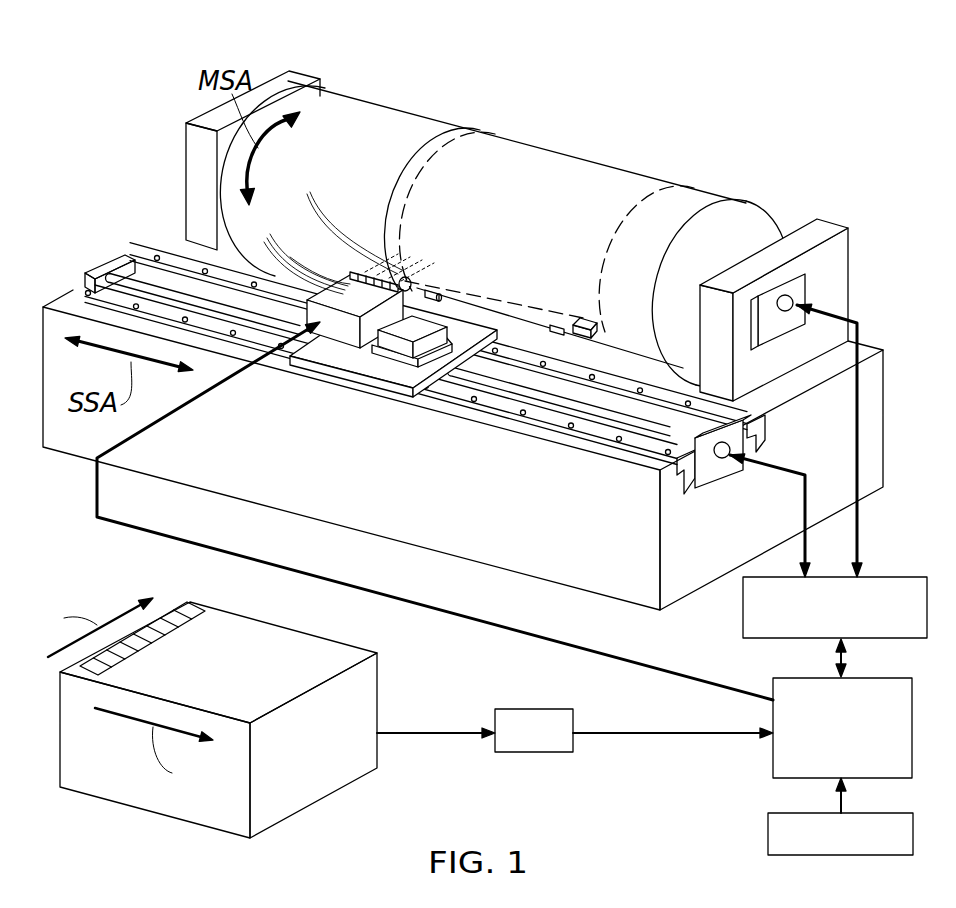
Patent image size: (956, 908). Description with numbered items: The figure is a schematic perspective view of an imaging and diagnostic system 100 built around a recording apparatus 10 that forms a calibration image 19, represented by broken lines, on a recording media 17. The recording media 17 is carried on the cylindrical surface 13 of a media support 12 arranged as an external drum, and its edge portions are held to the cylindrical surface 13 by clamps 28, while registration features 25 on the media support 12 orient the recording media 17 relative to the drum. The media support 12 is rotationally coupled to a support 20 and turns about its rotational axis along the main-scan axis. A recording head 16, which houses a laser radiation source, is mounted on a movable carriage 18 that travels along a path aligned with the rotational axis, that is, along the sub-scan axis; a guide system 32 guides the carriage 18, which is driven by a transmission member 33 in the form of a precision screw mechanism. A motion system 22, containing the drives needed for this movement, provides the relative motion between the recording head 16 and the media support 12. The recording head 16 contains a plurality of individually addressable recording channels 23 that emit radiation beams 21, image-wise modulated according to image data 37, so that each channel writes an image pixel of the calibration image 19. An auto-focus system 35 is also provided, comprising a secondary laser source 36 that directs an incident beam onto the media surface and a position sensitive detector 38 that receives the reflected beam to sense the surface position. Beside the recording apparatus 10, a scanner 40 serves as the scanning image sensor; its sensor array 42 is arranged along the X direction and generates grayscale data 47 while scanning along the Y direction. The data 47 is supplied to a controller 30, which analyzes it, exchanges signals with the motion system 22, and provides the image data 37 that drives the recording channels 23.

The recording apparatus 10 is at (55, 271).
The imaging and diagnostic system 100 is at (518, 100).
The media support 12 is at (723, 233).
The cylindrical surface 13 is at (672, 215).
The recording head 16 is at (296, 388).
The recording media 17 is at (433, 147).
The carriage 18 is at (372, 364).
The calibration image 19 is at (396, 172).
The support 20 is at (550, 430).
The radiation beams 21 is at (366, 228).
The motion system 22 is at (760, 628).
The recording channels 23 is at (303, 251).
The registration features 25 is at (556, 325).
The clamps 28 is at (440, 288).
The controller 30 is at (783, 768).
The guide system 32 is at (602, 431).
The transmission member 33 is at (515, 390).
The auto-focus system 35 is at (342, 392).
The secondary laser source 36 is at (348, 352).
The image data 37 is at (773, 847).
The position sensitive detector 38 is at (372, 362).
The scanner 40 is at (394, 684).
The sensor array 42 is at (190, 614).
The data 47 is at (518, 752).